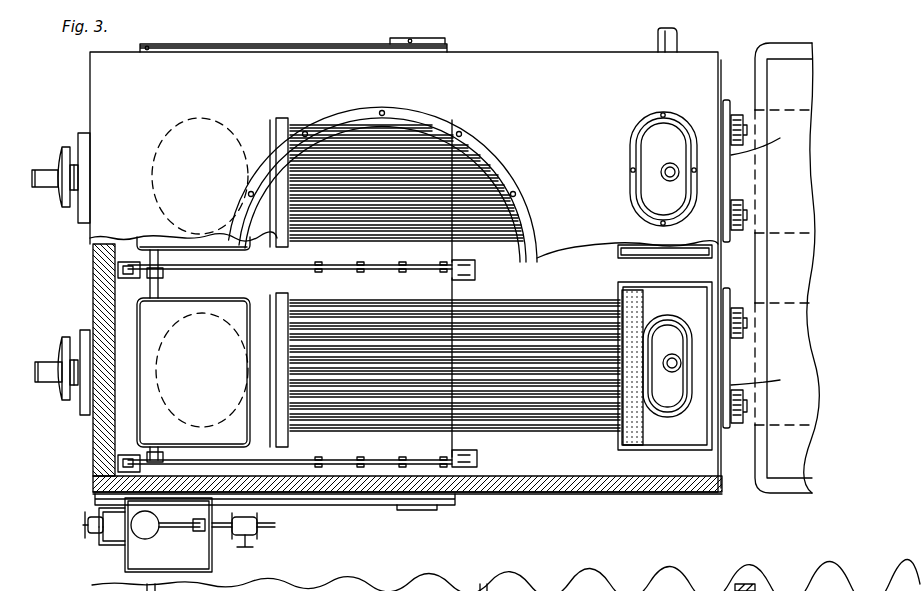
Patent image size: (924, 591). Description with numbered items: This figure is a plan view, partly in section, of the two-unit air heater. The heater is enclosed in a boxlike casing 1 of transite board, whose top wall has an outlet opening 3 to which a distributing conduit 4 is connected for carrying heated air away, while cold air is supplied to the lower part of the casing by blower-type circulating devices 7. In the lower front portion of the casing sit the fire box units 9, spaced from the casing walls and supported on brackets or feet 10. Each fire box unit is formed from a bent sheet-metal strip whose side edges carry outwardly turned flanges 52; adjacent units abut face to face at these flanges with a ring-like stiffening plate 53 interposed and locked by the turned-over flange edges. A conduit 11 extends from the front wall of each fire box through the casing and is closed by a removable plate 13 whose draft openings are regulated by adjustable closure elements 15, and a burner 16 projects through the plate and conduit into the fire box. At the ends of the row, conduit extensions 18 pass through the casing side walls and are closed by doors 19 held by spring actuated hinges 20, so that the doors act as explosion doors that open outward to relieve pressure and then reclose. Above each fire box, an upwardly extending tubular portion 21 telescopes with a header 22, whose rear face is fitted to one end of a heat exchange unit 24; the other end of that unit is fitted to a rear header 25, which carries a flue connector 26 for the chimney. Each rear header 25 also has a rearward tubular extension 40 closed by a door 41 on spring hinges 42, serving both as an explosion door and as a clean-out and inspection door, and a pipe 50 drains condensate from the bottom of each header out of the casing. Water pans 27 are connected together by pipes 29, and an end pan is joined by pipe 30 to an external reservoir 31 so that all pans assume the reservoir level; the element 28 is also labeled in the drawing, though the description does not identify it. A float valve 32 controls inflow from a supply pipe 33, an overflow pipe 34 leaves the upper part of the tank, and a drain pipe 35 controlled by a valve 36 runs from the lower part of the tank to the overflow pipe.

The casing 1 is at (93, 278).
The outlet opening 3 is at (258, 185).
The distributing conduit 4 is at (540, 222).
The circulating devices 7 is at (806, 186).
The fire box units 9 is at (408, 249).
The brackets or feet 10 is at (475, 278).
The conduit 11 is at (115, 360).
The removable plate 13 is at (80, 222).
The adjustable closure elements 15 is at (66, 198).
The burner 16 is at (42, 168).
The conduit extensions 18 is at (340, 470).
The doors 19 is at (292, 44).
The spring actuated hinges 20 is at (420, 39).
The tubular portion 21 is at (185, 130).
The header 22 is at (273, 282).
The heat exchange unit 24 is at (487, 192).
The header 25 is at (642, 125).
The flue connector 26 is at (668, 132).
The pans 27 is at (198, 246).
The header box wall 28 is at (250, 384).
The pipes 29 is at (160, 285).
The pipe 30 is at (175, 447).
The reservoir 31 is at (168, 535).
The float valve 32 is at (160, 540).
The supply pipe 33 is at (243, 545).
The overflow pipe 34 is at (110, 508).
The drain pipe 35 is at (108, 550).
The valve 36 is at (83, 525).
The tubular extension 40 is at (727, 300).
The door 41 is at (759, 247).
The spring hinges 42 is at (748, 214).
The pipe 50 is at (678, 40).
The flanges 52 is at (330, 272).
The stiffening plate 53 is at (470, 266).